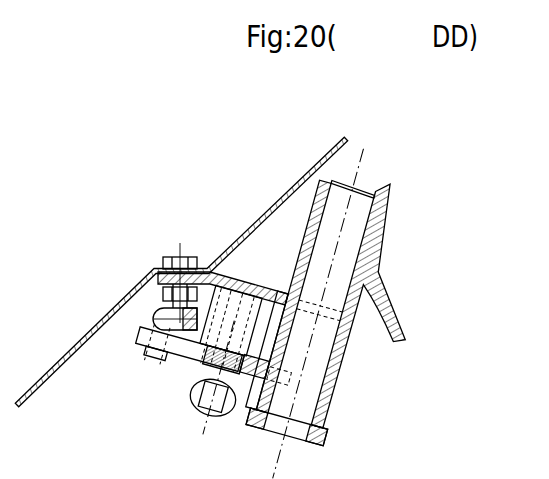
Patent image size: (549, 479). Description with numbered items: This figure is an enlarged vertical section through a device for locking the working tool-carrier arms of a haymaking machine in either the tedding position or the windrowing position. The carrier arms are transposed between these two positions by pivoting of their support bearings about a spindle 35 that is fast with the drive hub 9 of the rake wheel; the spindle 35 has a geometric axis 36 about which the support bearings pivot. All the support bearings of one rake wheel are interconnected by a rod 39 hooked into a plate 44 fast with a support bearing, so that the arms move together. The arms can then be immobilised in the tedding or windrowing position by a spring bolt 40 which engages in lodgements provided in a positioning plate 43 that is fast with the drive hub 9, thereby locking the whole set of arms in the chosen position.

The drive hub 9 is at (97, 324).
The spindle 35 is at (347, 258).
The geometric axis 36 is at (347, 213).
The rod 39 is at (150, 316).
The spring bolt 40 is at (231, 289).
The positioning plate 43 is at (207, 268).
The plate 44 is at (137, 347).